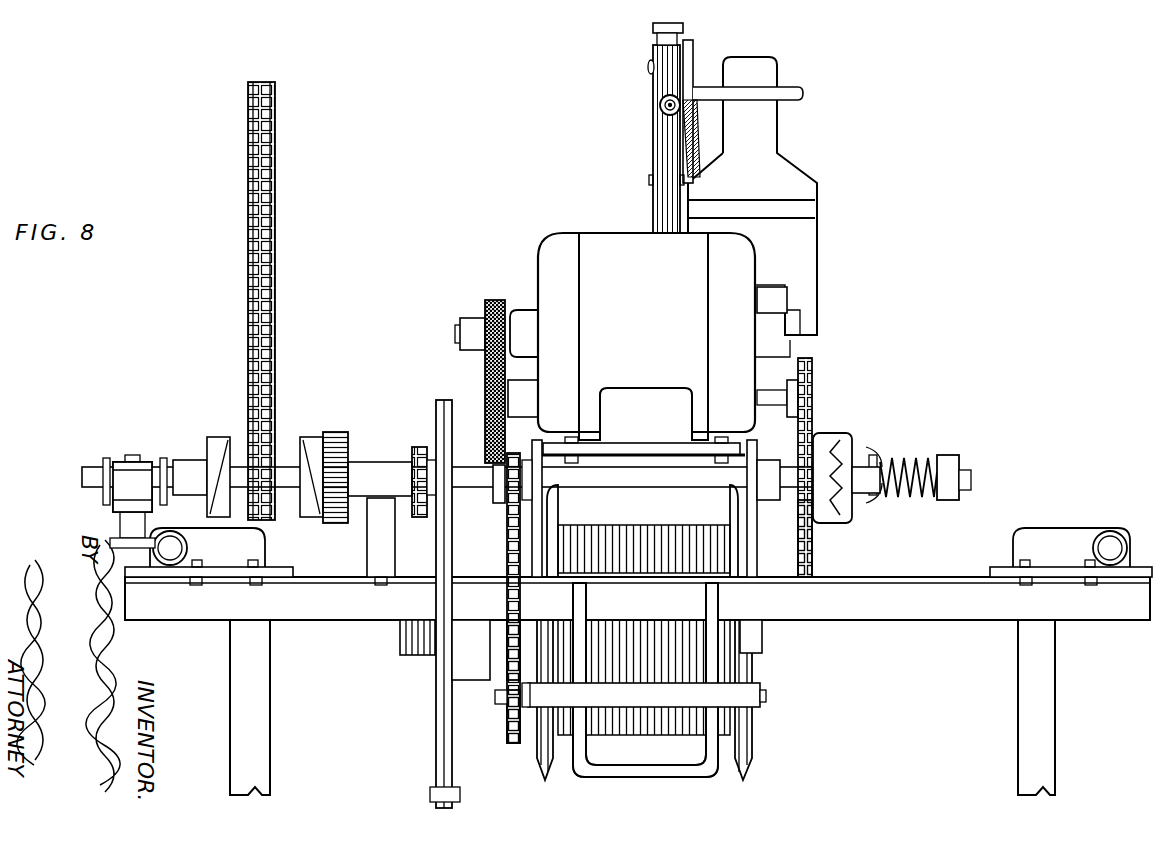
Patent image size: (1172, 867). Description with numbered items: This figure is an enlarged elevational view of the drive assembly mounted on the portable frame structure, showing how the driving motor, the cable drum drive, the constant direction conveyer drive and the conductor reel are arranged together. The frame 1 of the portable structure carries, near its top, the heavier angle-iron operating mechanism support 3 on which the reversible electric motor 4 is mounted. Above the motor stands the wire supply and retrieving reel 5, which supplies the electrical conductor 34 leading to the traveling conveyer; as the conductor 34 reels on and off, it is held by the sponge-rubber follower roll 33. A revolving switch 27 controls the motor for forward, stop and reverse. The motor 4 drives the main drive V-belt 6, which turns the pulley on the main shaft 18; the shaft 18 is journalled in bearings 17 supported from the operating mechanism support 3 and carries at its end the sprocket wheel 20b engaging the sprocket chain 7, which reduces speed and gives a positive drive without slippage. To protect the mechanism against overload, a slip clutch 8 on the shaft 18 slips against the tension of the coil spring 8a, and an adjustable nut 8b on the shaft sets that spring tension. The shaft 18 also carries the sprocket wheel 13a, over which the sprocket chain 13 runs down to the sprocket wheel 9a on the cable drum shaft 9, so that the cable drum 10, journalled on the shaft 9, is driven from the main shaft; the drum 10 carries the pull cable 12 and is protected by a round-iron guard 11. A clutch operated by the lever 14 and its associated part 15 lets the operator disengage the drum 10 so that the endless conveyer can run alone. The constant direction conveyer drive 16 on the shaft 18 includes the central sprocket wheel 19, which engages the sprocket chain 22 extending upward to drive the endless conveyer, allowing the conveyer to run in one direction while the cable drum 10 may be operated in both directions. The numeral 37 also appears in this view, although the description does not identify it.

The frame 1 is at (258, 755).
The operating mechanism support 3 is at (353, 612).
The reversible electric motor 4 is at (602, 245).
The wire supply and retrieving reel 5 is at (645, 165).
The main drive V-belt 6 is at (490, 302).
The sprocket chain 7 is at (812, 382).
The slip clutch 8 is at (861, 430).
The coil spring 8a is at (918, 462).
The adjustable nut 8b is at (948, 470).
The cable drum shaft 9 is at (765, 640).
The sprocket wheel 9a is at (508, 722).
The cable drum 10 is at (545, 745).
The guard 11 is at (130, 468).
The cable 12 is at (655, 735).
The sprocket chain 13 is at (503, 630).
The sprocket wheel 13a is at (505, 512).
The clutch lever 14 is at (446, 745).
The clutch 15 is at (470, 690).
The constant direction conveyer drive 16 is at (306, 422).
The bearings 17 is at (758, 475).
The main shaft 18 is at (92, 470).
The central sprocket wheel 19 is at (265, 525).
The sprocket wheel 20b is at (814, 555).
The sprocket chain 22 is at (262, 238).
The revolving switch 27 is at (772, 298).
The follower roll 33 is at (650, 54).
The electrical conductor 34 is at (668, 125).
The wheel hub 37 is at (458, 330).